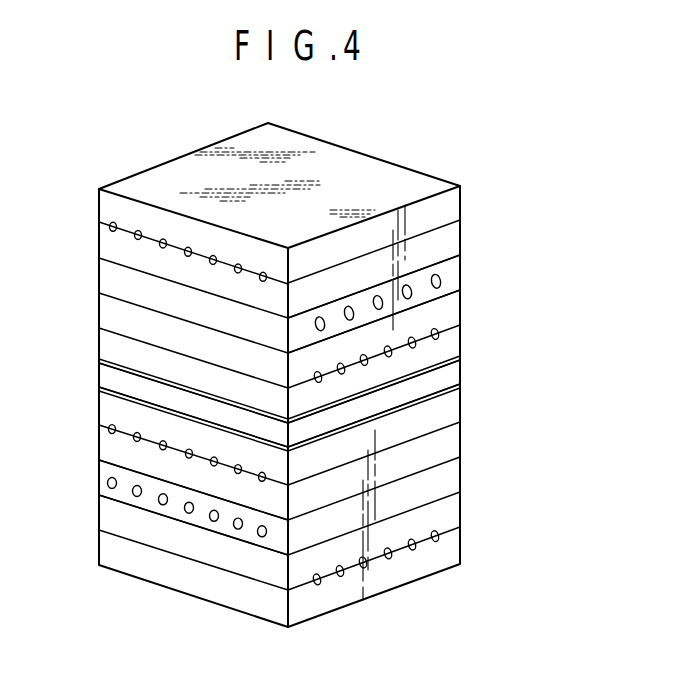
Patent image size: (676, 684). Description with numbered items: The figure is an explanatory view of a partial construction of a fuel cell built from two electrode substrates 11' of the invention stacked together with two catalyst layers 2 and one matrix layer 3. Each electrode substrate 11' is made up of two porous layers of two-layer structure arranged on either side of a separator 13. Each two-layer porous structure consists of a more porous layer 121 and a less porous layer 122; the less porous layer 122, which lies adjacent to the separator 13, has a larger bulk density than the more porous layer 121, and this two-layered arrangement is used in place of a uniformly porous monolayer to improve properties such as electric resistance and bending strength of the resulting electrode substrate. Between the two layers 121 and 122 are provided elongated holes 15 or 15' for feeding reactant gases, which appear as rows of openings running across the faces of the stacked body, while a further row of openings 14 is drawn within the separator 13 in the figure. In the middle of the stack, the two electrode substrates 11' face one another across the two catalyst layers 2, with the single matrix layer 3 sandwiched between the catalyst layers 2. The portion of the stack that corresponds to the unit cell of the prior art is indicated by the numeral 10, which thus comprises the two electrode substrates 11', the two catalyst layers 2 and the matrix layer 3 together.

The unit cell 10 is at (537, 248).
The electrode substrate 11' is at (149, 387).
The more porous layer 121 is at (467, 209).
The less porous layer 122 is at (462, 245).
The separator 13 is at (458, 268).
The through holes 14 is at (441, 283).
The elongated holes 15 is at (307, 357).
The elongated holes 15' is at (284, 403).
The catalyst layer 2 is at (460, 360).
The matrix layer 3 is at (461, 373).